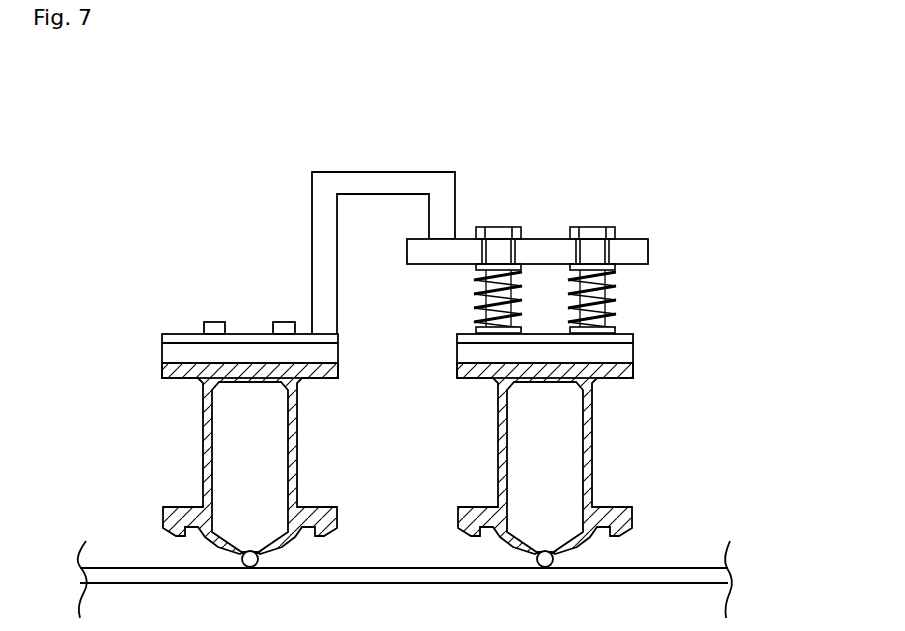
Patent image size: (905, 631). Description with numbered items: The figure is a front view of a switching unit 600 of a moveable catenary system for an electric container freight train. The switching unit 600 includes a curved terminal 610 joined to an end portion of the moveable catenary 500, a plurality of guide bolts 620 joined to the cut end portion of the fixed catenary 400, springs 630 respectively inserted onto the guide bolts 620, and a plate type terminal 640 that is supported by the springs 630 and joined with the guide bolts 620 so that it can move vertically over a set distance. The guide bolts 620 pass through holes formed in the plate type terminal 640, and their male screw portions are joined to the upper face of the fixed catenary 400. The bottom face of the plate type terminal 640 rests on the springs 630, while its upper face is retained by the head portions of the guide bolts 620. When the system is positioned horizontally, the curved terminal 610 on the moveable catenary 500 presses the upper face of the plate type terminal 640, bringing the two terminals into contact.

The fixed catenary 400 is at (610, 452).
The moveable catenary 500 is at (193, 443).
The switching unit 600 is at (472, 187).
The curved terminal 610 is at (315, 232).
The guide bolts 620 is at (593, 232).
The springs 630 is at (614, 303).
The plate type terminal 640 is at (640, 252).